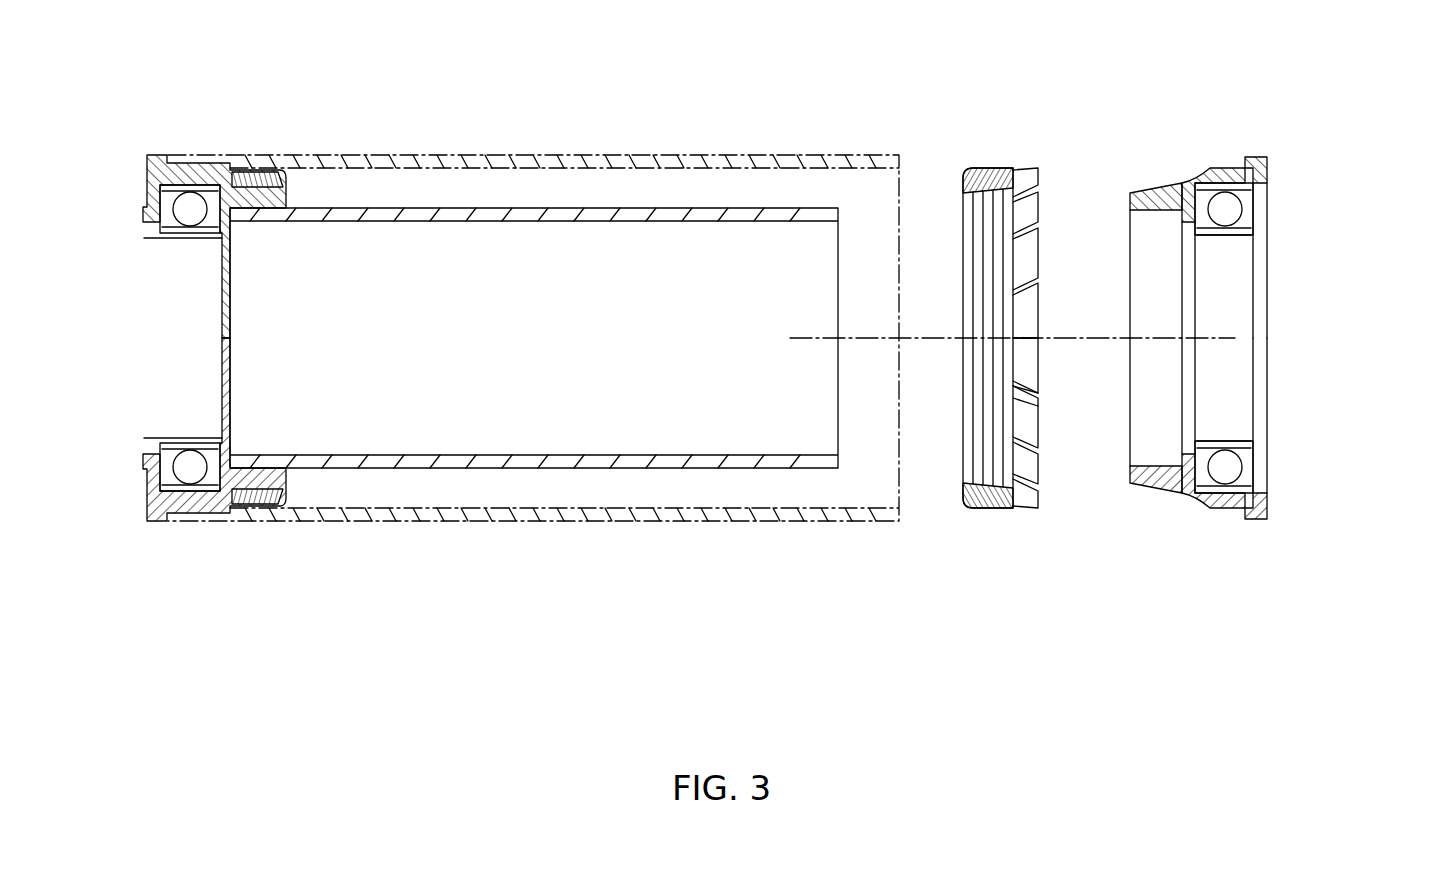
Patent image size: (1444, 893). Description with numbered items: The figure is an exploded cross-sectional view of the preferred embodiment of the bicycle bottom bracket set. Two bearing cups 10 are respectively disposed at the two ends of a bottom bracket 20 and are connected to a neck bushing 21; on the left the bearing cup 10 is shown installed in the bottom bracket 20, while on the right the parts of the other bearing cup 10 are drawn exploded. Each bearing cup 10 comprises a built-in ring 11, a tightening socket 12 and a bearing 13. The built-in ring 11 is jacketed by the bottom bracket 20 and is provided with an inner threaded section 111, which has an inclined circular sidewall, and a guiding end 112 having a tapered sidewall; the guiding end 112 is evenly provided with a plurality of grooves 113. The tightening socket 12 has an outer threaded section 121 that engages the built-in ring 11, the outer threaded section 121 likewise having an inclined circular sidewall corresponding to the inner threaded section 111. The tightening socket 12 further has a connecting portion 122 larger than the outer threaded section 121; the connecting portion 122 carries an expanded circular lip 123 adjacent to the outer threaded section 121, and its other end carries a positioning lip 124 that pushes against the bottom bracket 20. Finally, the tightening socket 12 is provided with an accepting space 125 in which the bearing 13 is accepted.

The bearing cup 10 is at (126, 158).
The built-in ring 11 is at (1048, 398).
The inner threaded section 111 is at (1000, 512).
The guiding end 112 is at (1025, 470).
The grooves 113 is at (1020, 401).
The tightening socket 12 is at (1212, 336).
The outer threaded section 121 is at (1148, 186).
The connecting portion 122 is at (1222, 169).
The expanded circular lip 123 is at (1200, 178).
The positioning lip 124 is at (1255, 157).
The accepting space 125 is at (1234, 210).
The bearing 13 is at (1203, 232).
The bottom bracket 20 is at (432, 148).
The neck bushing 21 is at (590, 210).